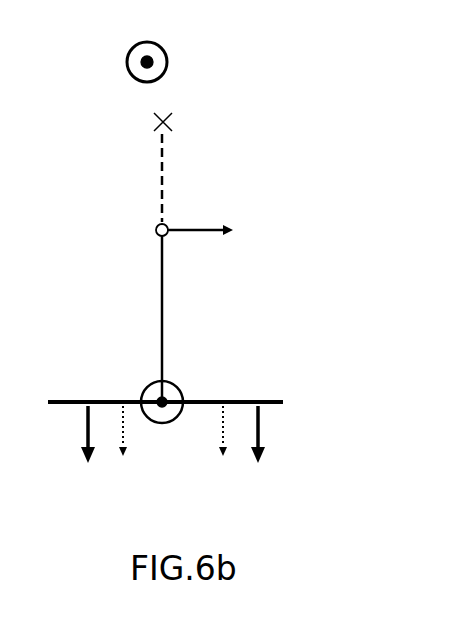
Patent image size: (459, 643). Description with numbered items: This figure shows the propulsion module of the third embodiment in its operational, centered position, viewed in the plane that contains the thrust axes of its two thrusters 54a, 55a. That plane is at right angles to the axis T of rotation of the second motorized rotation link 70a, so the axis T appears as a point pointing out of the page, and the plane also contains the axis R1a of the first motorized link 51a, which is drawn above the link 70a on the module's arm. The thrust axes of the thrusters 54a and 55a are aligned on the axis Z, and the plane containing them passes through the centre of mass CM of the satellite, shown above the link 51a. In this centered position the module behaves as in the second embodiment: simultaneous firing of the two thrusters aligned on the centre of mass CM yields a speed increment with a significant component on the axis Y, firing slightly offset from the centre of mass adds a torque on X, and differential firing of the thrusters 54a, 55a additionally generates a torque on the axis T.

The axis T is at (129, 62).
The centre of mass CM is at (175, 127).
The first motorized link 51a is at (155, 231).
The axis R1a is at (203, 227).
The second motorized rotation link 70a is at (185, 388).
The thruster 54a is at (88, 464).
The thruster 55a is at (262, 458).